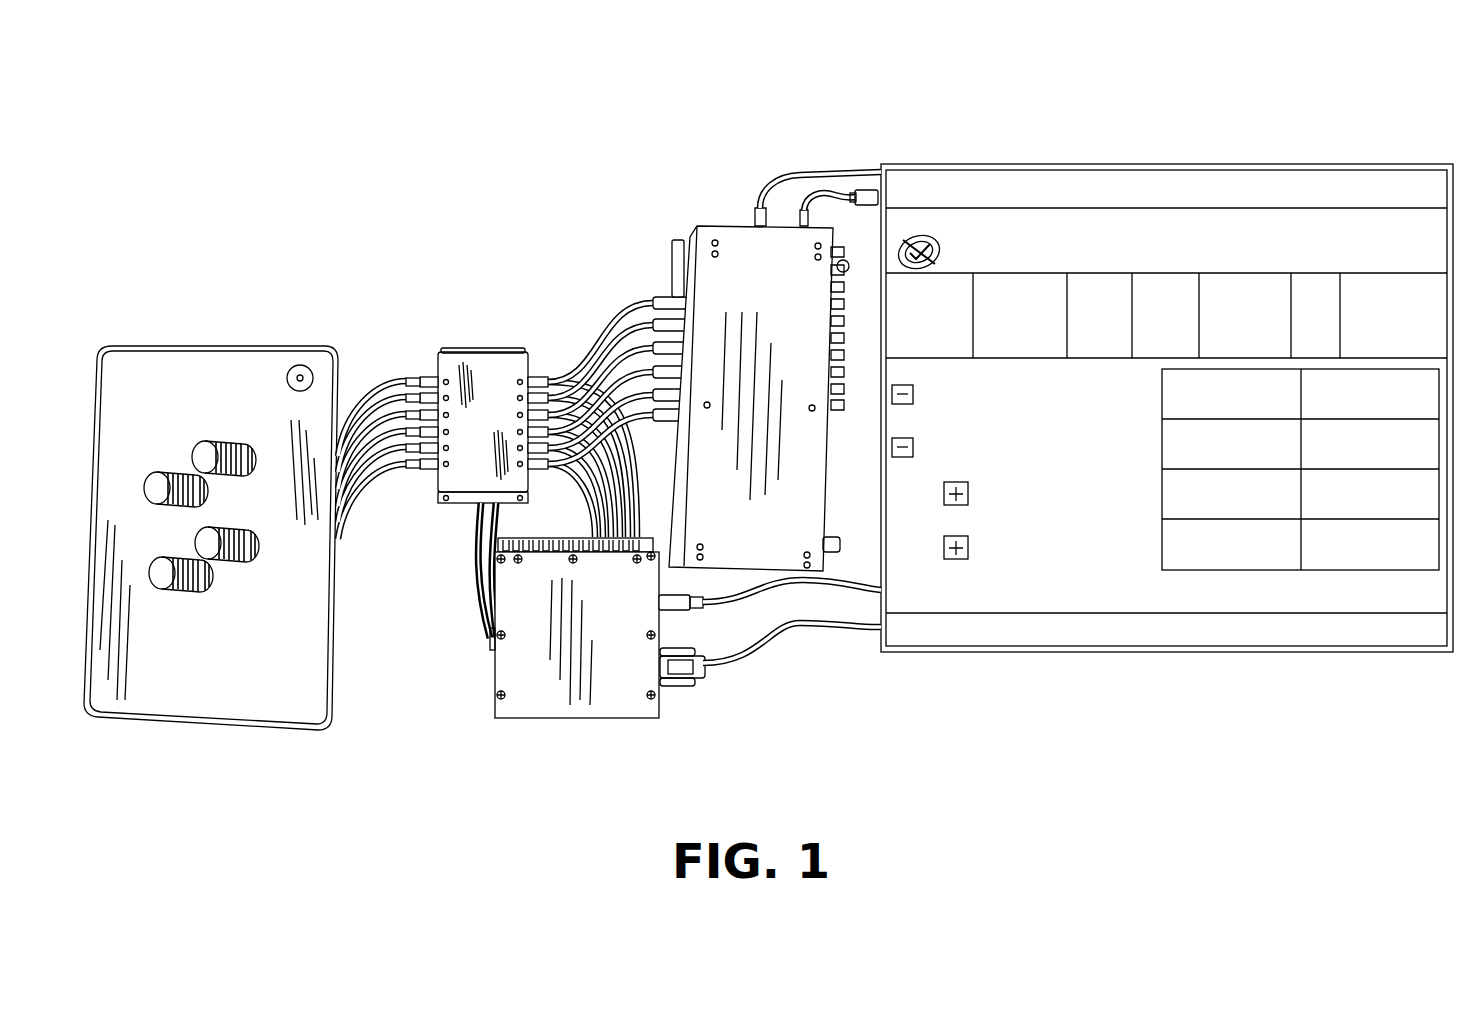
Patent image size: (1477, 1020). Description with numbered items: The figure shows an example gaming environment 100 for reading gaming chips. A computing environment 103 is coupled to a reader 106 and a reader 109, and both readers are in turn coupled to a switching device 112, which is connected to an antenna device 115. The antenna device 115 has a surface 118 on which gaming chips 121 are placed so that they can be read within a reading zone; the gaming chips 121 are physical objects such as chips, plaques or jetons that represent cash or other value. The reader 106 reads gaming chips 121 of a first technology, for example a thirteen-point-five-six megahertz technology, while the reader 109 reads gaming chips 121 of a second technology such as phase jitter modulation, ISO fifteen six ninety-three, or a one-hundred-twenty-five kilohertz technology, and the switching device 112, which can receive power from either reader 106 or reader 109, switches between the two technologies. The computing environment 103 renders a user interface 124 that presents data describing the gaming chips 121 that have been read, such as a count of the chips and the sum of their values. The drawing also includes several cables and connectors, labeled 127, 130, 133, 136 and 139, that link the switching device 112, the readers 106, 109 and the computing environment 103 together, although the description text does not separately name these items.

The gaming environment 100 is at (1355, 85).
The computing environment 103 is at (1168, 165).
The reader 106 is at (715, 226).
The reader 109 is at (620, 718).
The switching device 112 is at (478, 350).
The antenna device 115 is at (210, 346).
The surface 118 is at (130, 428).
The gaming chips 121 is at (192, 590).
The user interface 124 is at (1083, 652).
The cable 127 is at (468, 590).
The serial cable 130 is at (745, 660).
The USB cable 133 is at (812, 590).
The power cable 136 is at (780, 183).
The connector cable 139 is at (837, 197).